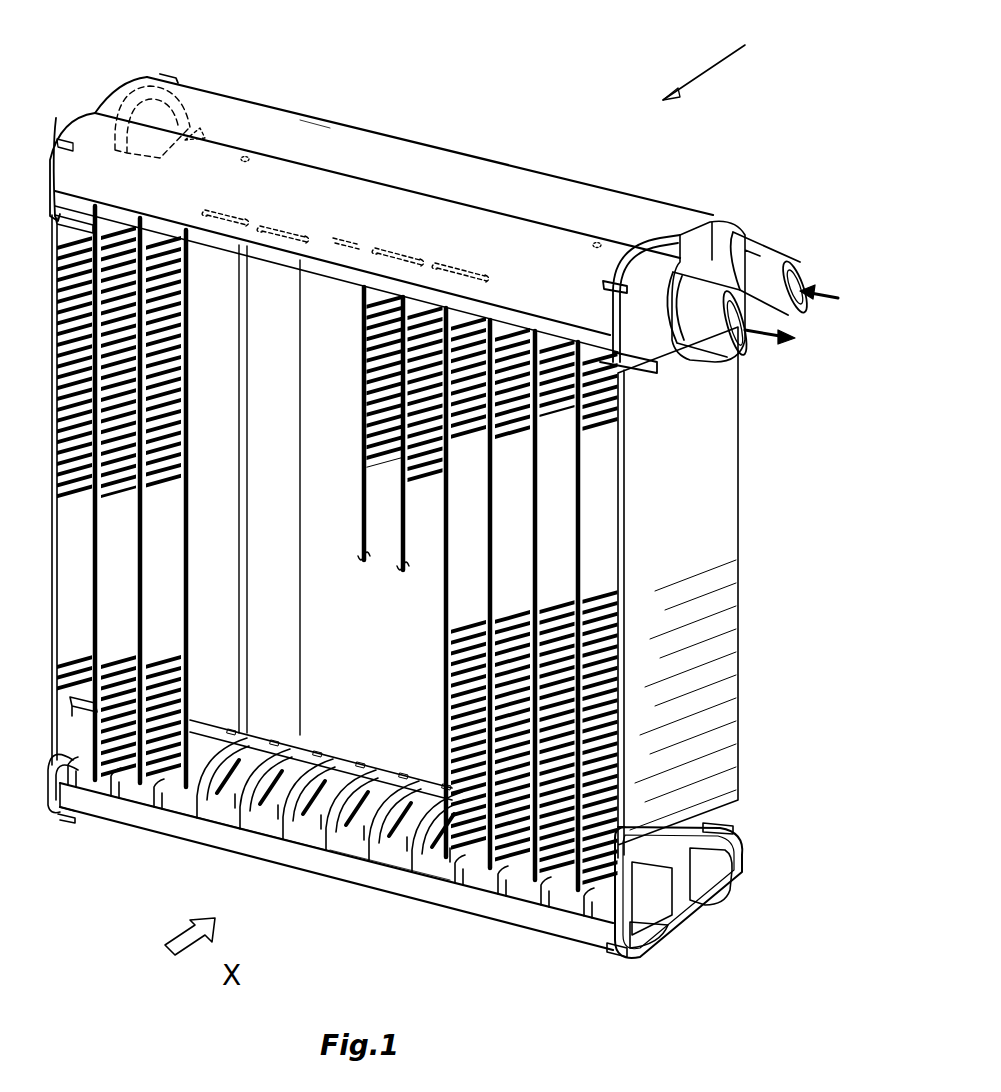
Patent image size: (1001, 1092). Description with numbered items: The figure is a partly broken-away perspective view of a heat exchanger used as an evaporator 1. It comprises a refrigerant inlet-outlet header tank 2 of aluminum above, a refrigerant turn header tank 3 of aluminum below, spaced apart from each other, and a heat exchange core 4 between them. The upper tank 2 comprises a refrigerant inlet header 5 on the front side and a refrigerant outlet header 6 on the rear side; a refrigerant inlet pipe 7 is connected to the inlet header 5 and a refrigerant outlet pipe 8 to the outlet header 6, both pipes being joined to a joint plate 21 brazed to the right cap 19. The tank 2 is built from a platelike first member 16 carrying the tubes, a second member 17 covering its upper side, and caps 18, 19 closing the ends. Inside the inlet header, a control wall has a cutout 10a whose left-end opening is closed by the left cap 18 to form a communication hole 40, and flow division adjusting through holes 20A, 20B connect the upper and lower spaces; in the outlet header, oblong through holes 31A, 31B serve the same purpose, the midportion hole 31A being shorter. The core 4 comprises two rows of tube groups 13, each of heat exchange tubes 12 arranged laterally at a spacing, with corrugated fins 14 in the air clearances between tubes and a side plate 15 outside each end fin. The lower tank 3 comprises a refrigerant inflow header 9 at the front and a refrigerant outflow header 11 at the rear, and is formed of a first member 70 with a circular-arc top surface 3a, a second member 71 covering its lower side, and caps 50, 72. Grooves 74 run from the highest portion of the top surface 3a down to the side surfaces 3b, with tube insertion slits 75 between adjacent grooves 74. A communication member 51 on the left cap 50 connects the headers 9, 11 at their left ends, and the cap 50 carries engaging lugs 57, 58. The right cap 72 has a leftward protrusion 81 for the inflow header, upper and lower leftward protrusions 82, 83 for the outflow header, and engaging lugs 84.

The evaporator 1 is at (713, 57).
The refrigerant inlet-outlet header tank 2 is at (390, 130).
The refrigerant turn header tank 3 is at (455, 905).
The top surface 3a is at (365, 745).
The side surfaces 3b is at (250, 830).
The heat exchange core 4 is at (608, 560).
The refrigerant inlet header 5 is at (502, 170).
The refrigerant outlet header 6 is at (430, 205).
The refrigerant inlet pipe 7 is at (788, 262).
The refrigerant outlet pipe 8 is at (712, 338).
The refrigerant inflow header 9 is at (400, 760).
The cutout 10a is at (200, 130).
The refrigerant outflow header 11 is at (175, 808).
The heat exchange tubes 12 is at (136, 600).
The tube groups 13 is at (218, 633).
The corrugated fins 14 is at (125, 495).
The side plate 15 is at (55, 630).
The first member 16 is at (333, 288).
The second member 17 is at (330, 135).
The left cap 18 is at (78, 115).
The right cap 19 is at (680, 240).
The flow division adjusting through hole 20A is at (250, 157).
The flow division adjusting through hole 20B is at (600, 243).
The joint plate 21 is at (735, 232).
The refrigerant passing oblong through hole 31A is at (345, 238).
The refrigerant passing oblong through holes 31B is at (470, 275).
The communication hole 40 is at (190, 127).
The left cap 50 is at (75, 813).
The communication member 51 is at (50, 780).
The engaging lugs 57 is at (62, 823).
The engaging lugs 58 is at (70, 702).
The first member 70 is at (320, 735).
The second member 71 is at (395, 888).
The right cap 72 is at (715, 905).
The grooves 74 is at (340, 845).
The tube insertion slits 75 is at (285, 840).
The leftward protrusion 81 is at (720, 876).
The upper leftward protrusion 82 is at (665, 905).
The lower leftward protrusion 83 is at (648, 940).
The engaging lugs 84 is at (735, 828).